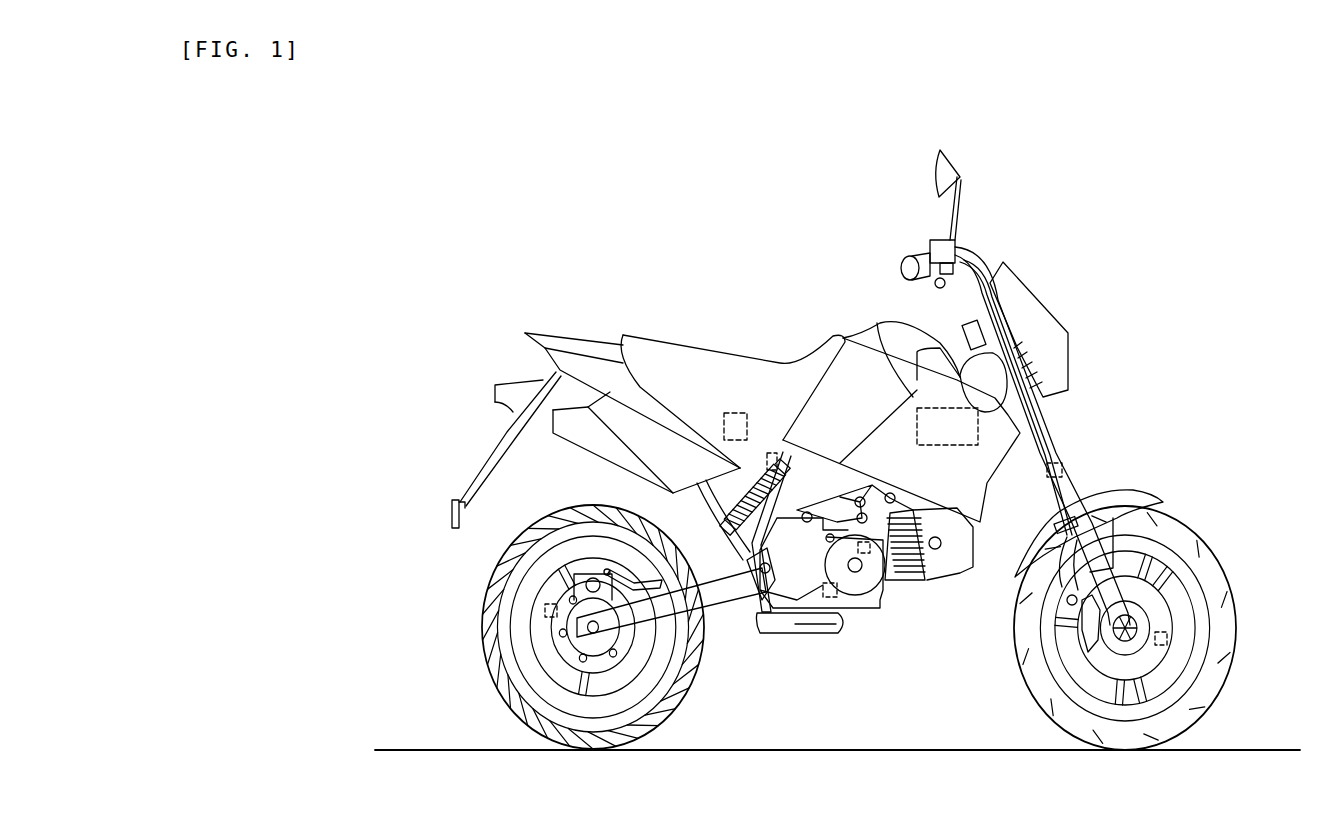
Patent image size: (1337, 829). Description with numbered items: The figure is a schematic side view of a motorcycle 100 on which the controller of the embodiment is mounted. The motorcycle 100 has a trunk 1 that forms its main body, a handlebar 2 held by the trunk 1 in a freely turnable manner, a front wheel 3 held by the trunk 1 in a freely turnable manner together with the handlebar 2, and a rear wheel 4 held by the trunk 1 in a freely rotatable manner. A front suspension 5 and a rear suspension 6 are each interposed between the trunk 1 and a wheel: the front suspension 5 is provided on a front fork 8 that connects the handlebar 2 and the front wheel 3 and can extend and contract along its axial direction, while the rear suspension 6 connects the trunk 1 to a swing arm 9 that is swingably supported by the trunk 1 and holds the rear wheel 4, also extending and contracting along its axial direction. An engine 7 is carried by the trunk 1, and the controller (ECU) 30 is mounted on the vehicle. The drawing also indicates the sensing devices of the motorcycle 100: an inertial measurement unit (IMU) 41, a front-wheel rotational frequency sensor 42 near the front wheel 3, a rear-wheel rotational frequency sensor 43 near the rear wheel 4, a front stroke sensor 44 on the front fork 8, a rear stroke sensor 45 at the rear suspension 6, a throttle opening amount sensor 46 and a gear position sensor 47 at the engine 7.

The motorcycle 100 is at (1120, 160).
The trunk 1 is at (806, 362).
The handlebar 2 is at (922, 258).
The front wheel 3 is at (1236, 645).
The rear wheel 4 is at (483, 657).
The front suspension 5 is at (1130, 492).
The rear suspension 6 is at (727, 590).
The engine 7 is at (897, 583).
The front fork 8 is at (1048, 426).
The swing arm 9 is at (667, 610).
The controller (ECU) 30 is at (885, 322).
The inertial measurement unit (IMU) 41 is at (737, 410).
The front-wheel rotational frequency sensor 42 is at (1167, 632).
The rear-wheel rotational frequency sensor 43 is at (545, 610).
The front stroke sensor 44 is at (1063, 462).
The rear stroke sensor 45 is at (771, 452).
The throttle opening amount sensor 46 is at (865, 554).
The gear position sensor 47 is at (834, 598).